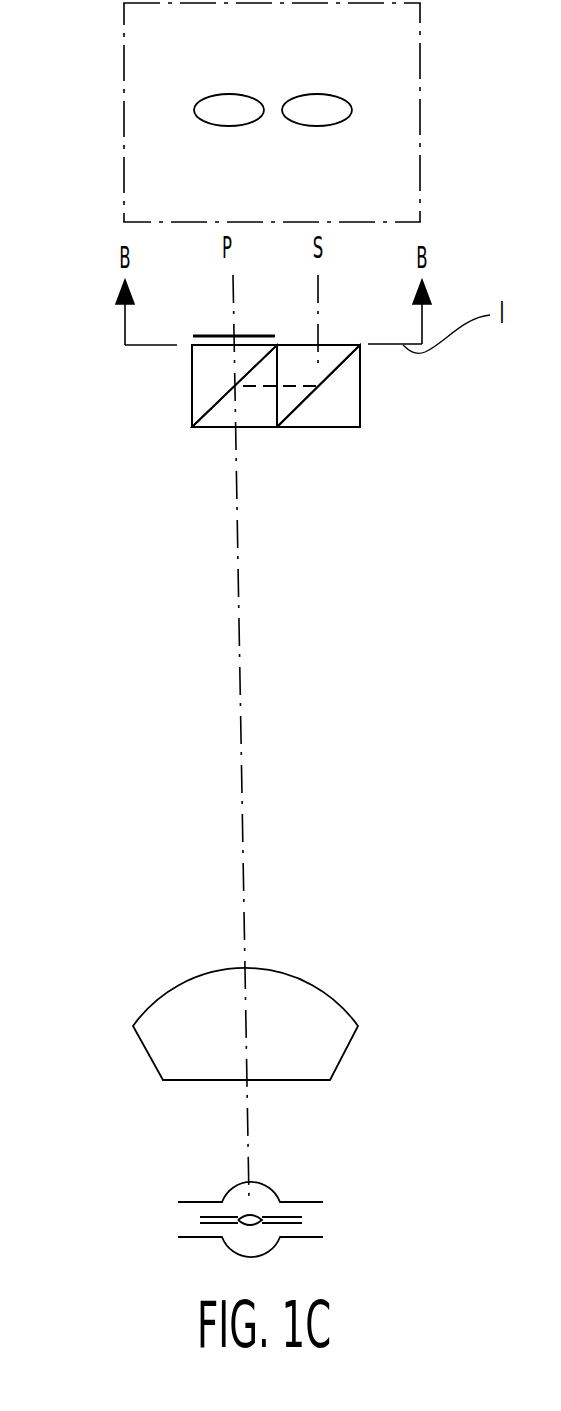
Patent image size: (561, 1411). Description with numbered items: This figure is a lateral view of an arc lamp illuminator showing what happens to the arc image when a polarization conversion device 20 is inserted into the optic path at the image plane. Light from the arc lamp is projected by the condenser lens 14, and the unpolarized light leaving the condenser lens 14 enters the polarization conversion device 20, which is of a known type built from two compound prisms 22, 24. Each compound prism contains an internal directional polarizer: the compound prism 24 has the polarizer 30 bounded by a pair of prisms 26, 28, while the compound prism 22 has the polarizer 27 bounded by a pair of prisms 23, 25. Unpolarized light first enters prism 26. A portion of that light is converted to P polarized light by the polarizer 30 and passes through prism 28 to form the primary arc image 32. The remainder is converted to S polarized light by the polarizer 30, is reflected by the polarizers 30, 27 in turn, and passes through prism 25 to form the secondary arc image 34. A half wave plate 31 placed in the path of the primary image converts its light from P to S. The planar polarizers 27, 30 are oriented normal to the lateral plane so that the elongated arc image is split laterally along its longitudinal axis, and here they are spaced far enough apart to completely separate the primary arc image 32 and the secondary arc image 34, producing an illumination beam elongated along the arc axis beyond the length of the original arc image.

The condenser lens 14 is at (408, 1064).
The polarization conversion device 20 is at (402, 382).
The compound prism 22 is at (327, 428).
The prism 23 is at (297, 420).
The compound prism 24 is at (252, 428).
The prism 25 is at (334, 350).
The prism 26 is at (223, 417).
The directional polarizer 27 is at (417, 418).
The prism 28 is at (200, 409).
The directional polarizer 30 is at (217, 395).
The half wave plate 31 is at (210, 336).
The primary arc image 32 is at (208, 125).
The secondary arc image 34 is at (330, 126).